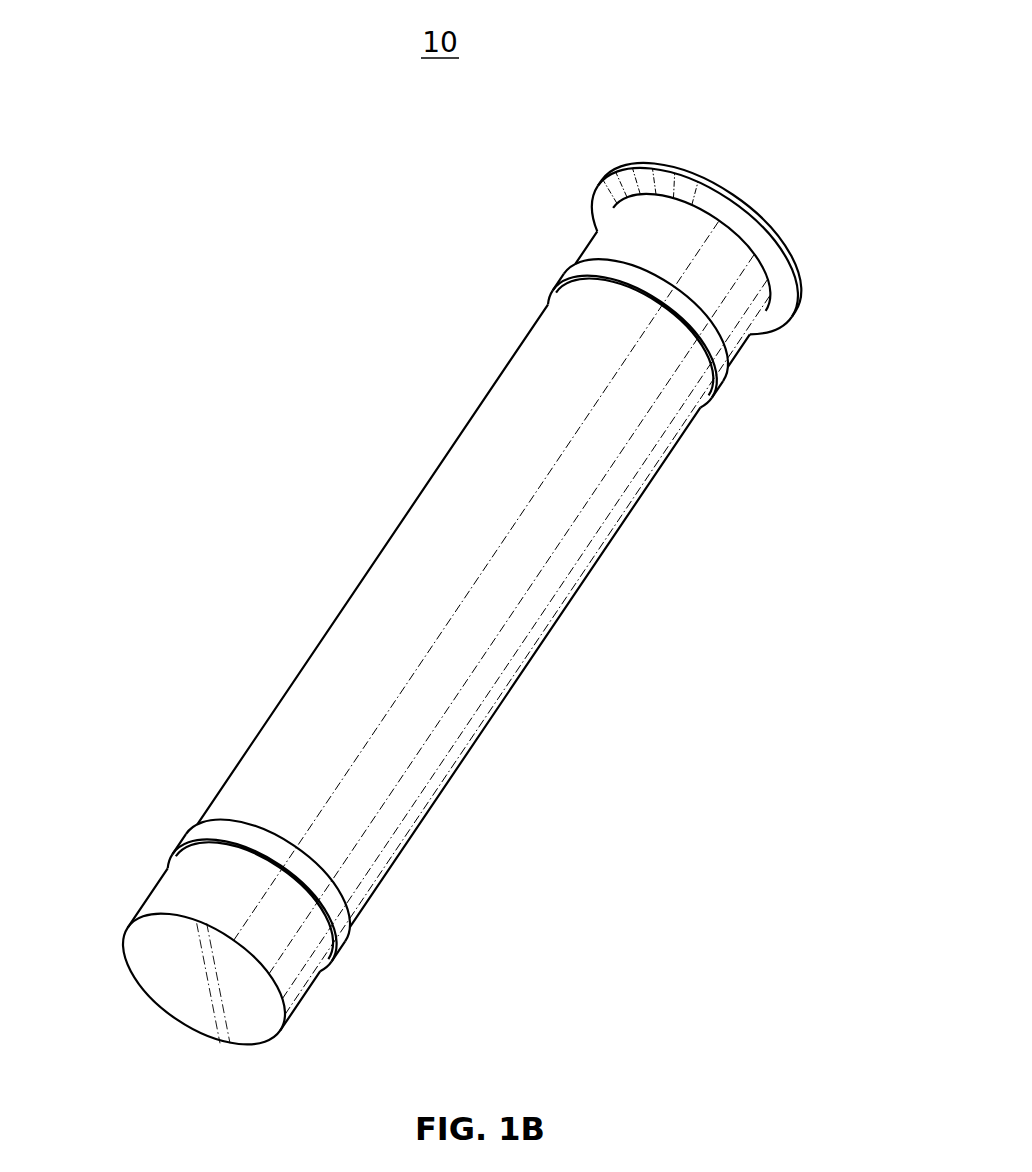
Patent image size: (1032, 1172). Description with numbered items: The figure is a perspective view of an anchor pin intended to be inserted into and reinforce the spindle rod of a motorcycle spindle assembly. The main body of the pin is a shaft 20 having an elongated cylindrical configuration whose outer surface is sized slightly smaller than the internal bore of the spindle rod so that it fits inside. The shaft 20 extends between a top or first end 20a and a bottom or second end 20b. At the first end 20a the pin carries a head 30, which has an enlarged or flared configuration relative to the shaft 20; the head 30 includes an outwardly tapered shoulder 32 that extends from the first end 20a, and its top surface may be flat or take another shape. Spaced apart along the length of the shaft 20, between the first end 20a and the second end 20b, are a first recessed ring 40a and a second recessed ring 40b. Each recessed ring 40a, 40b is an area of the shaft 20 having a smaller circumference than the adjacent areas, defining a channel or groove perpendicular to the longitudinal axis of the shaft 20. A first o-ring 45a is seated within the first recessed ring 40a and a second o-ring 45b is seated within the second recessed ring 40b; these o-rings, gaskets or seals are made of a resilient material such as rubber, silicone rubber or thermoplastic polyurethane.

The shaft 20 is at (460, 599).
The first end 20a is at (703, 238).
The second end 20b is at (172, 906).
The head 30 is at (660, 182).
The tapered shoulder 32 is at (703, 238).
The first recessed ring 40a is at (549, 375).
The second recessed ring 40b is at (370, 810).
The first o-ring 45a is at (694, 347).
The second o-ring 45b is at (242, 808).